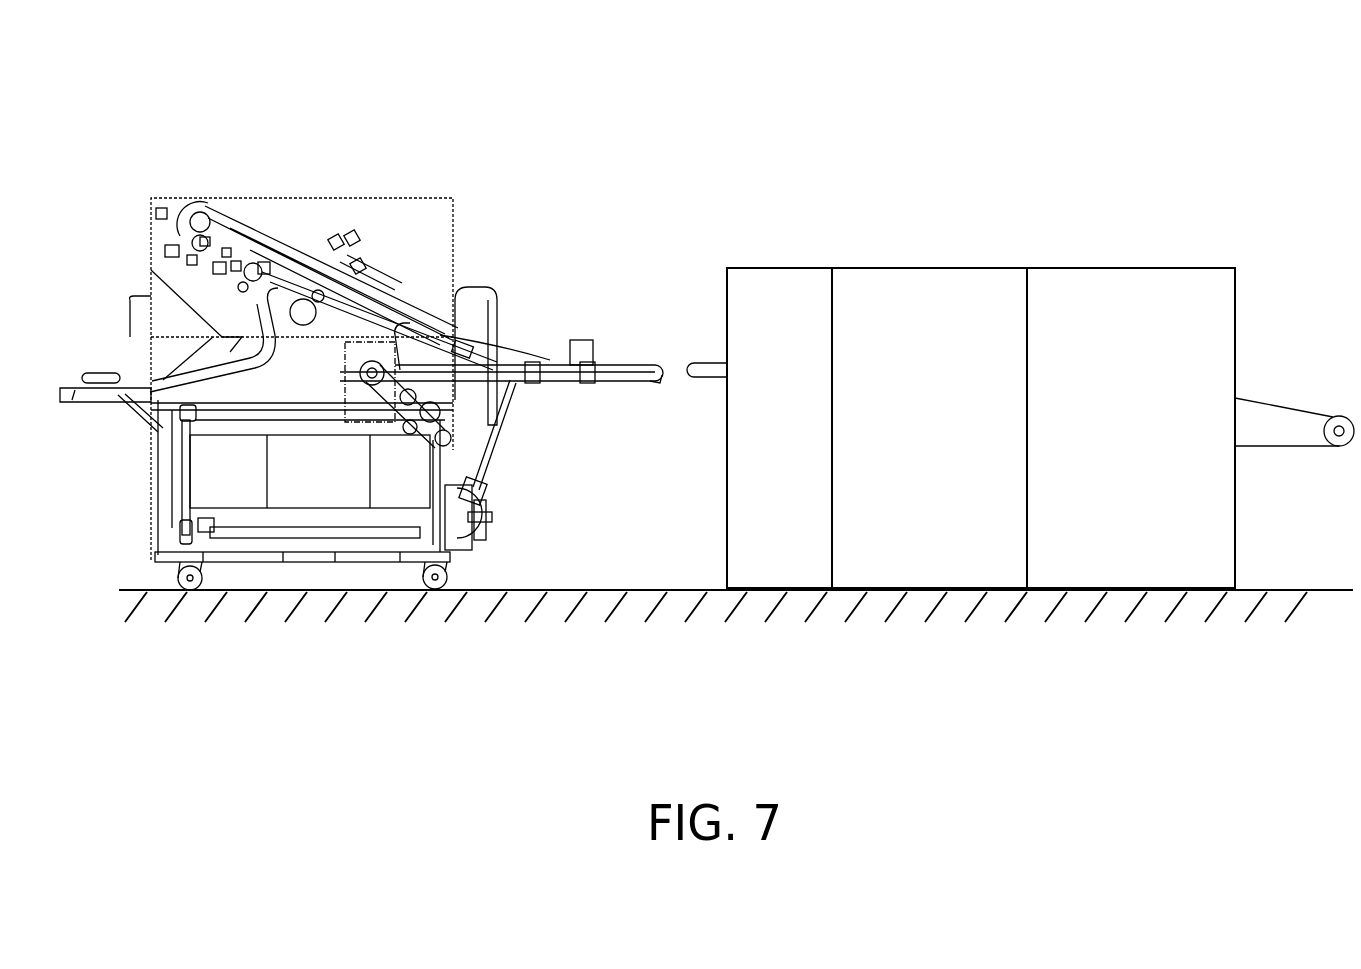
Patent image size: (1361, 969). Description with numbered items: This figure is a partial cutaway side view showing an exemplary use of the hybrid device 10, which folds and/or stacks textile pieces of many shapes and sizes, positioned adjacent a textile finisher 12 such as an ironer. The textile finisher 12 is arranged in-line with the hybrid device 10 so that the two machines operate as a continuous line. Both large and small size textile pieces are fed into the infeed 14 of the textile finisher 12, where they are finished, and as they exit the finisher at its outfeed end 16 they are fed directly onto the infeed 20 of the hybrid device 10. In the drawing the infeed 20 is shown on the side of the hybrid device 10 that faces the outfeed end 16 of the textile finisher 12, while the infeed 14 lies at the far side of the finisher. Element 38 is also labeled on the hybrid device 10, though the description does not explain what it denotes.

The hybrid device 10 is at (128, 195).
The textile finisher 12 is at (1092, 250).
The infeed 14 is at (1310, 396).
The outfeed end 16 is at (702, 342).
The infeed 20 is at (550, 350).
The side bracket 38 is at (70, 390).